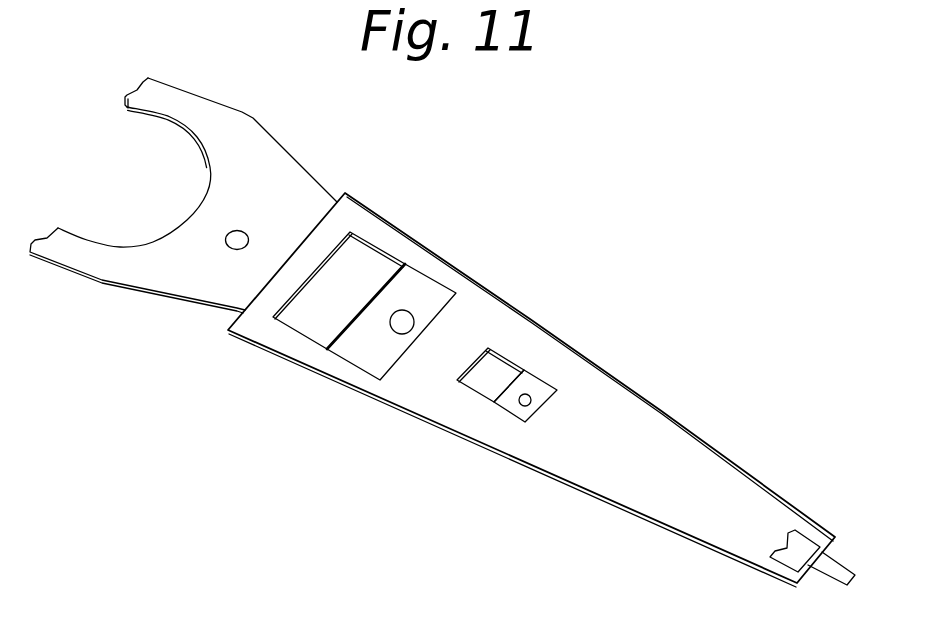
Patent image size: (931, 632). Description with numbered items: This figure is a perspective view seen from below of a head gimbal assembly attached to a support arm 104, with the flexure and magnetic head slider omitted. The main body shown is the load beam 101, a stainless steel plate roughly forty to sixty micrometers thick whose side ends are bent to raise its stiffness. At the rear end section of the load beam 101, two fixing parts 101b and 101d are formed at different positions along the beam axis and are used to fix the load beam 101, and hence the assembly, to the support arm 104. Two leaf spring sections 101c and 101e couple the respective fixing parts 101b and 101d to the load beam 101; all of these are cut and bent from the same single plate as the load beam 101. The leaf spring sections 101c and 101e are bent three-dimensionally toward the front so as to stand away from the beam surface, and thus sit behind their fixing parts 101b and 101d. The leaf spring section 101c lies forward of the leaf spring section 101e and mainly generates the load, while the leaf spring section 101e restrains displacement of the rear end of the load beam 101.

The load beam 101 is at (633, 428).
The fixing part 101b is at (528, 390).
The leaf spring section 101c is at (488, 375).
The fixing part 101d is at (421, 297).
The leaf spring section 101e is at (363, 268).
The support arm 104 is at (270, 167).